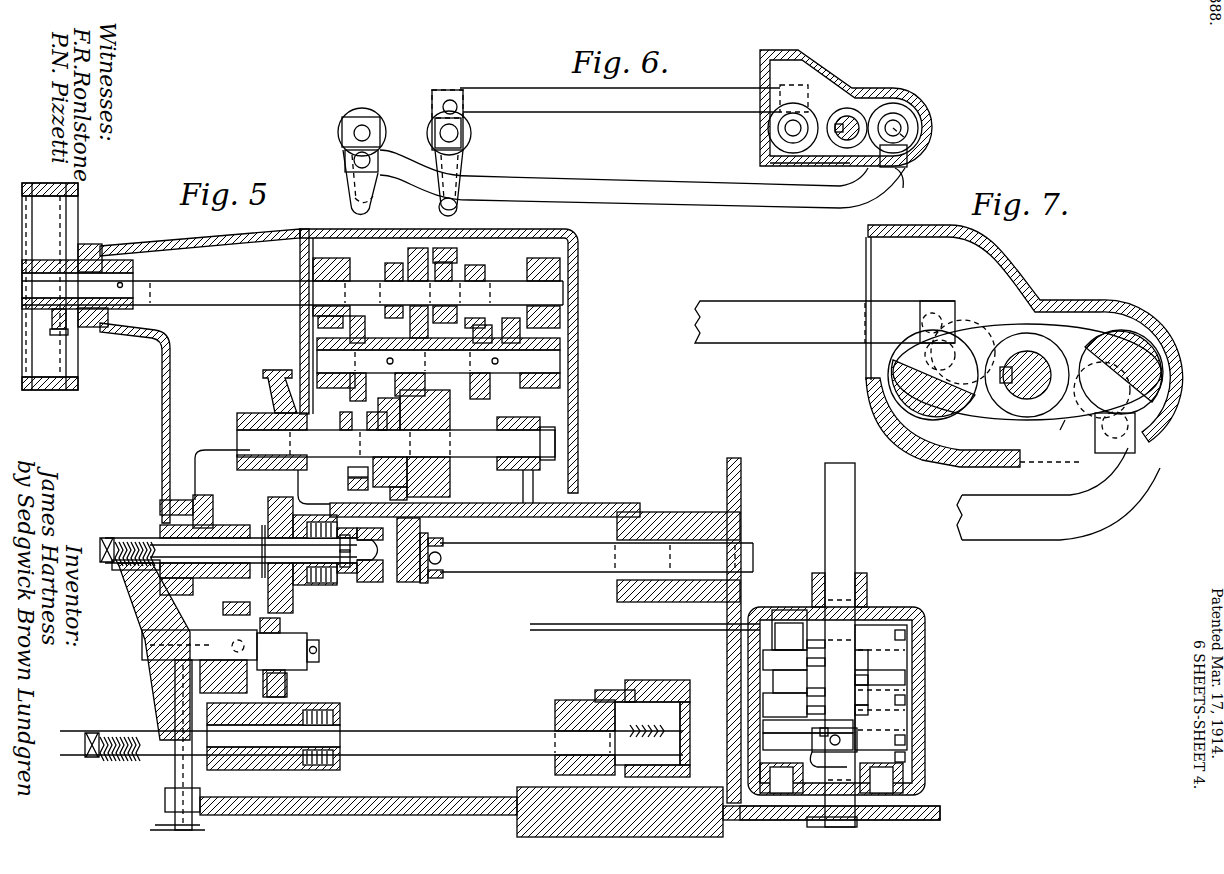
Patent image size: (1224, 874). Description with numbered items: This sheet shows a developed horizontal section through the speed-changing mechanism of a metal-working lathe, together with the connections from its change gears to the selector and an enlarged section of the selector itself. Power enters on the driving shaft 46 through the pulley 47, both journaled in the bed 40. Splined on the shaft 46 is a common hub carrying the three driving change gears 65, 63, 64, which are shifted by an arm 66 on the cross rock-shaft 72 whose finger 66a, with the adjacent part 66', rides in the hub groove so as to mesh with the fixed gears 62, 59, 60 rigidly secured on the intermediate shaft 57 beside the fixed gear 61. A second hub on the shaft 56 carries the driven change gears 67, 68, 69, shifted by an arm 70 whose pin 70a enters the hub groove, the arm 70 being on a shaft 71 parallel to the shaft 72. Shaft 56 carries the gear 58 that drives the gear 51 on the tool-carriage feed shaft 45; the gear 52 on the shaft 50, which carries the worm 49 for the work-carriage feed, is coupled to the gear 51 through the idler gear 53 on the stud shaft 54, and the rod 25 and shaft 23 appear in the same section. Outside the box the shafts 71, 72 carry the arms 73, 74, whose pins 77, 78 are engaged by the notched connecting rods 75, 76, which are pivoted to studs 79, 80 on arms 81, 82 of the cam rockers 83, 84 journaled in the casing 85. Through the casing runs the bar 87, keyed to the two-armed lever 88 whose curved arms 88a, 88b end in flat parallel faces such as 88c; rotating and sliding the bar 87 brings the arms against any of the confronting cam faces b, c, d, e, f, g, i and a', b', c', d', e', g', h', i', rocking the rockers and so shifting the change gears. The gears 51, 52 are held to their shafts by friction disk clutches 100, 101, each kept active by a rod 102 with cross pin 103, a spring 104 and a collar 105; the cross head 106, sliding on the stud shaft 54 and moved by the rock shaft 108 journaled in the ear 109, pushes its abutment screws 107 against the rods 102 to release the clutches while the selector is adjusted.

In FIG. 7, the shaft 23 is at (1128, 345).
In FIG. 5, the rod 25 is at (627, 632).
In FIG. 5, the bed 40 is at (468, 800).
In FIG. 5, the shaft 45 is at (525, 564).
In FIG. 5, the shaft 46 is at (225, 298).
In FIG. 5, the pulley 47 is at (55, 233).
In FIG. 5, the worm 49 is at (665, 712).
In FIG. 5, the shaft 50 is at (455, 732).
In FIG. 5, the gear 51 is at (305, 590).
In FIG. 5, the gear 52 is at (300, 700).
In FIG. 5, the idler gear 53 is at (320, 660).
In FIG. 5, the stud shaft 54 is at (148, 652).
In FIG. 5, the shaft 56 is at (545, 445).
In FIG. 5, the intermediate shaft 57 is at (555, 364).
In FIG. 5, the gear 58 is at (270, 376).
In FIG. 5, the fixed gear 59 is at (366, 332).
In FIG. 5, the fixed gear 60 is at (426, 351).
In FIG. 5, the fixed gear 61 is at (476, 348).
In FIG. 5, the fixed gear 62 is at (511, 318).
In FIG. 5, the driving change gear 63 is at (393, 272).
In FIG. 5, the driving change gear 64 is at (419, 256).
In FIG. 5, the driving change gear 65 is at (480, 268).
In FIG. 5, the arm 66 is at (452, 246).
In FIG. 6, the arm 66 is at (434, 134).
In FIG. 5, the gear 66' is at (466, 255).
In FIG. 6, the finger 66a is at (450, 200).
In FIG. 5, the driven change gear 67 is at (390, 486).
In FIG. 5, the driven change gear 68 is at (440, 540).
In FIG. 5, the driven change gear 69 is at (450, 492).
In FIG. 5, the arm 70 is at (348, 487).
In FIG. 6, the arm 70 is at (352, 192).
In FIG. 5, the pin 70a is at (350, 474).
In FIG. 6, the pin 70a is at (354, 210).
In FIG. 6, the shaft 71 is at (360, 125).
In FIG. 6, the cross rock-shaft 72 is at (456, 128).
In FIG. 6, the arm 73 is at (345, 143).
In FIG. 6, the arm 74 is at (438, 122).
In FIG. 5, the connecting rod 75 is at (873, 612).
In FIG. 6, the connecting rod 75 is at (640, 192).
In FIG. 7, the connecting rod 75 is at (1005, 540).
In FIG. 6, the connecting rod 76 is at (690, 112).
In FIG. 7, the connecting rod 76 is at (786, 345).
In FIG. 6, the pin 77 is at (355, 160).
In FIG. 6, the pin 78 is at (455, 100).
In FIG. 5, the stud 79 is at (895, 612).
In FIG. 6, the stud 79 is at (898, 170).
In FIG. 5, the stud 80 is at (805, 608).
In FIG. 6, the stud 80 is at (775, 92).
In FIG. 5, the arm 81 is at (920, 625).
In FIG. 5, the arm 82 is at (782, 612).
In FIG. 5, the cam rocker 83 is at (905, 672).
In FIG. 6, the cam rocker 83 is at (905, 147).
In FIG. 7, the cam rocker 83 is at (1039, 372).
In FIG. 5, the cam rocker 84 is at (808, 670).
In FIG. 6, the cam rocker 84 is at (768, 122).
In FIG. 7, the cam rocker 84 is at (890, 392).
In FIG. 5, the casing 85 is at (915, 650).
In FIG. 6, the casing 85 is at (905, 95).
In FIG. 7, the casing 85 is at (1078, 302).
In FIG. 5, the bar 87 is at (845, 548).
In FIG. 6, the bar 87 is at (853, 120).
In FIG. 7, the bar 87 is at (1040, 365).
In FIG. 5, the two-armed lever 88 is at (860, 740).
In FIG. 6, the two-armed lever 88 is at (845, 118).
In FIG. 7, the two-armed lever 88 is at (1020, 358).
In FIG. 5, the arm 88a is at (787, 725).
In FIG. 6, the arm 88a is at (918, 128).
In FIG. 7, the arm 88a is at (970, 330).
In FIG. 5, the arm 88b is at (905, 703).
In FIG. 7, the arm 88b is at (1066, 425).
In FIG. 6, the flat face 88c is at (800, 148).
In FIG. 7, the flat face 88c is at (930, 355).
In FIG. 5, the friction disk clutch 100 is at (340, 580).
In FIG. 5, the friction disk clutch 101 is at (335, 712).
In FIG. 5, the rod 102 is at (165, 520).
In FIG. 5, the cross pin 103 is at (345, 533).
In FIG. 5, the spring 104 is at (160, 540).
In FIG. 5, the collar 105 is at (125, 566).
In FIG. 5, the cross head 106 is at (140, 600).
In FIG. 5, the abutment screw 107 is at (105, 540).
In FIG. 5, the rock shaft 108 is at (173, 710).
In FIG. 5, the ear 109 is at (165, 797).
In FIG. 5, the cam face a' is at (828, 761).
In FIG. 5, the cam face b' is at (834, 739).
In FIG. 5, the cam face c' is at (765, 726).
In FIG. 5, the cam face d' is at (826, 711).
In FIG. 5, the cam face e' is at (826, 691).
In FIG. 5, the cam face g' is at (771, 689).
In FIG. 5, the cam face h' is at (824, 646).
In FIG. 5, the cam face i' is at (822, 663).
In FIG. 5, the cam face b is at (937, 753).
In FIG. 5, the cam face c is at (936, 753).
In FIG. 5, the cam face d is at (943, 705).
In FIG. 5, the cam face e is at (860, 710).
In FIG. 5, the cam face f is at (770, 690).
In FIG. 5, the cam face g is at (852, 678).
In FIG. 5, the cam face i is at (934, 646).